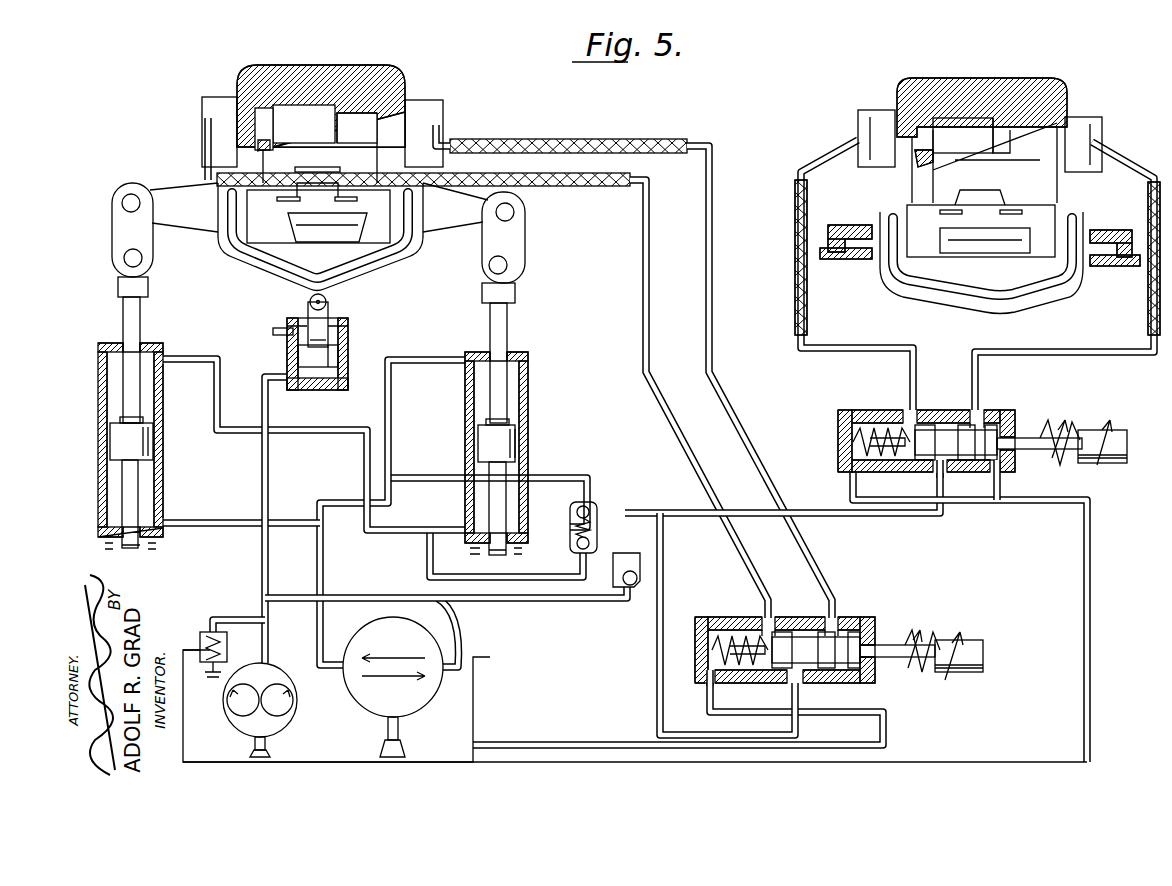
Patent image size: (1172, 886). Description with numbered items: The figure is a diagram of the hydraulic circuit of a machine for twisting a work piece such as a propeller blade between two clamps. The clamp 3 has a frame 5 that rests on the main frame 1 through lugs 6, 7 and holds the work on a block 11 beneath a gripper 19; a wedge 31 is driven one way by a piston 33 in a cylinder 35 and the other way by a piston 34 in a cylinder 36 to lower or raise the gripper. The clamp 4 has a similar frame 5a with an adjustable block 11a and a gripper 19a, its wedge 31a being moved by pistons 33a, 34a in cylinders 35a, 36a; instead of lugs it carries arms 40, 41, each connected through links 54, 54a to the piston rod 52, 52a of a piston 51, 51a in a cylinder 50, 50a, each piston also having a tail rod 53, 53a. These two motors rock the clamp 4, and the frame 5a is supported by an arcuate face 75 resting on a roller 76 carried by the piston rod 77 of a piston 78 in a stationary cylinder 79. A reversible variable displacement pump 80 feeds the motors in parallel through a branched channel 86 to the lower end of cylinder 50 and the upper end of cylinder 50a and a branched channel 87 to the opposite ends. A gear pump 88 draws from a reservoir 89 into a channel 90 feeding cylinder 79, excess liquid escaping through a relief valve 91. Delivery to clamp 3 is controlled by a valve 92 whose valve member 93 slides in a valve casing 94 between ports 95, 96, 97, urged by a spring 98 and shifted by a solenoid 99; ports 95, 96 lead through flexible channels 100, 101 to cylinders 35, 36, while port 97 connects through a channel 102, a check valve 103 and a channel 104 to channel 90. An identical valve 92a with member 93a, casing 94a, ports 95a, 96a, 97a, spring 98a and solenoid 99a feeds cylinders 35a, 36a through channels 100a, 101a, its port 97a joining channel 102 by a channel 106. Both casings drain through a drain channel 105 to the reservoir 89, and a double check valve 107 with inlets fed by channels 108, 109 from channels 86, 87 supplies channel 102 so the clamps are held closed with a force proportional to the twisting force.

The main frame 1 is at (850, 259).
The clamp 3 is at (1010, 68).
The clamp 4 is at (284, 52).
The frame 5 is at (981, 259).
The frame 5a is at (320, 237).
The lug 6 is at (862, 226).
The lug 7 is at (1110, 230).
The block 11 is at (948, 241).
The adjustable block 11a is at (327, 227).
The gripper 19 is at (975, 201).
The gripper 19a is at (320, 193).
The wedge 31 is at (965, 151).
The wedge 31a is at (304, 124).
The piston 33 is at (922, 166).
The piston 33a is at (268, 108).
The piston 34 is at (1005, 141).
The piston 34a is at (350, 113).
The cylinder 35 is at (890, 110).
The cylinder 35a is at (219, 97).
The cylinder 36 is at (1085, 117).
The cylinder 36a is at (432, 100).
The arm 40 is at (184, 207).
The arm 41 is at (455, 207).
The cylinder 50 is at (98, 382).
The cylinder 50a is at (528, 387).
The piston 51 is at (110, 438).
The piston 51a is at (478, 446).
The piston rod 52 is at (123, 323).
The piston rod 52a is at (507, 325).
The tail rod 53 is at (122, 494).
The tail rod 53a is at (506, 514).
The link 54 is at (132, 240).
The link 54a is at (503, 247).
The arcuate face 75 is at (346, 293).
The roller 76 is at (308, 300).
The piston rod 77 is at (332, 319).
The piston 78 is at (298, 349).
The cylinder 79 is at (348, 353).
The reversible variable displacement pump 80 is at (360, 689).
The branched channel 86 is at (445, 364).
The branched channel 87 is at (212, 356).
The gear pump 88 is at (245, 723).
The reservoir 89 is at (490, 697).
The channel 90 is at (262, 471).
The relief valve 91 is at (211, 620).
The valve 92 is at (806, 412).
The valve 92a is at (685, 613).
The valve member 93 is at (956, 442).
The valve member 93a is at (816, 650).
The valve casing 94 is at (1000, 412).
The valve casing 94a is at (880, 683).
The port 95 is at (910, 472).
The port 95a is at (772, 683).
The port 96 is at (985, 469).
The port 96a is at (836, 617).
The port 97 is at (960, 410).
The port 97a is at (808, 611).
The spring 98 is at (872, 410).
The spring 98a is at (712, 656).
The solenoid 99 is at (1082, 397).
The solenoid 99a is at (945, 610).
The channel 100 is at (836, 347).
The channel 100a is at (205, 160).
The channel 101 is at (1097, 350).
The channel 101a is at (490, 143).
The channel 102 is at (900, 521).
The check valve 103 is at (625, 581).
The channel 104 is at (383, 600).
The drain channel 105 is at (1076, 500).
The channel 106 is at (658, 666).
The double check valve 107 is at (597, 507).
The channel 108 is at (540, 478).
The channel 109 is at (527, 579).